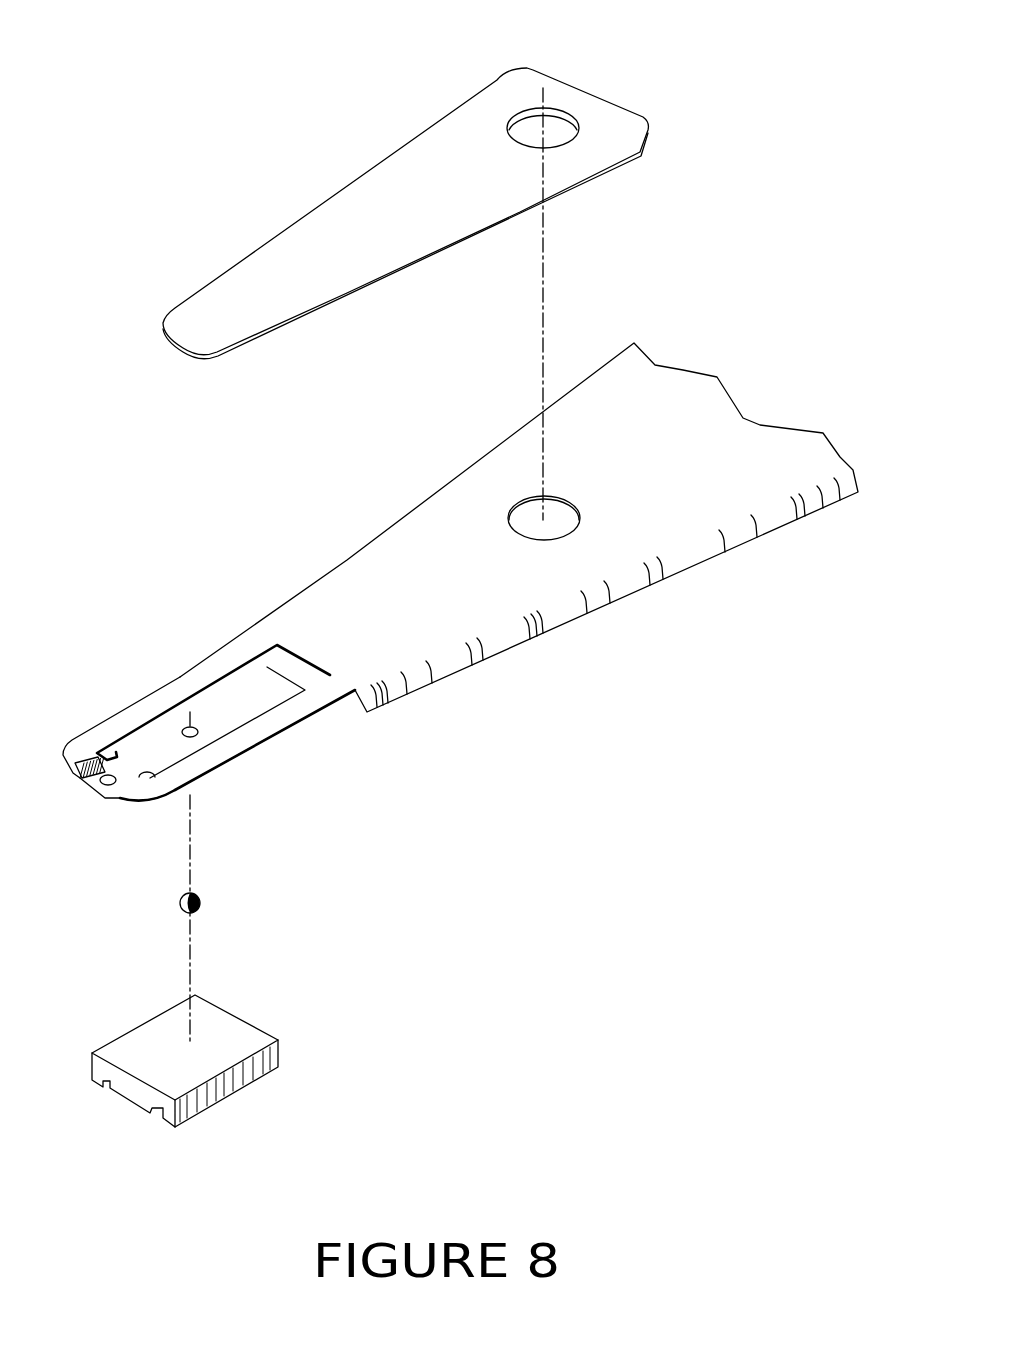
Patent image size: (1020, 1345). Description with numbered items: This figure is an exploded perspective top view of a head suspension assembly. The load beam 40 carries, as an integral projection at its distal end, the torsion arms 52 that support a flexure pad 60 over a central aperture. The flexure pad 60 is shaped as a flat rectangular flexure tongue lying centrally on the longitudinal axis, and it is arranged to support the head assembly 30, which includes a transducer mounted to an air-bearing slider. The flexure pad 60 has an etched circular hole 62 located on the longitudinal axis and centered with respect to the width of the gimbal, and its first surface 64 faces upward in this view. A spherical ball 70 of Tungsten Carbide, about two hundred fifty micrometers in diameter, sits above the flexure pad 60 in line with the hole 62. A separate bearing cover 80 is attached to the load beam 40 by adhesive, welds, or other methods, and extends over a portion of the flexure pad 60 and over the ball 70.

The head assembly 30 is at (233, 1108).
The load beam 40 is at (503, 578).
The torsion arms 52 is at (148, 707).
The flexure pad 60 is at (257, 703).
The circular hole 62 is at (197, 737).
The first surface 64 is at (228, 714).
The ball 70 is at (213, 908).
The bearing cover 80 is at (397, 222).